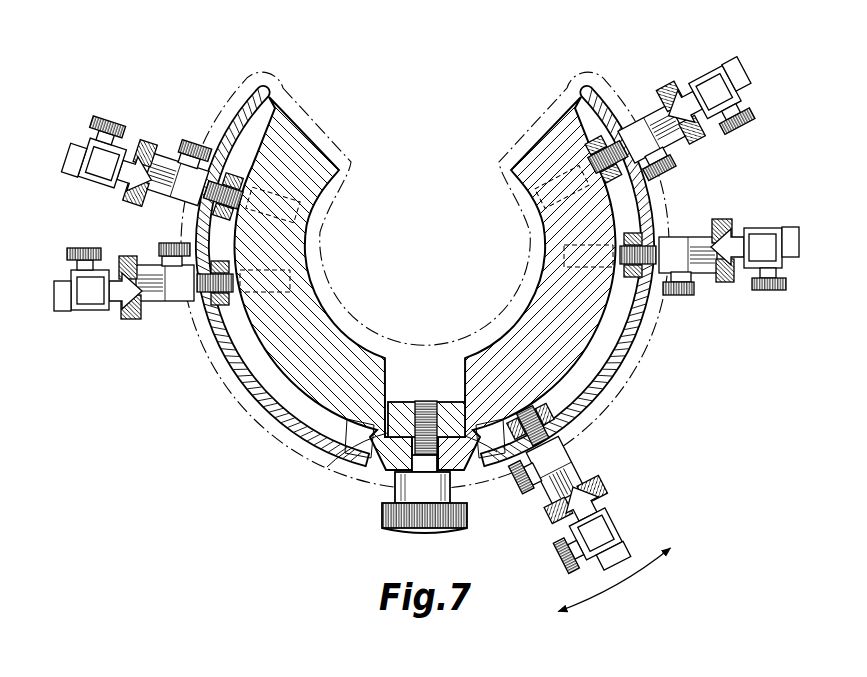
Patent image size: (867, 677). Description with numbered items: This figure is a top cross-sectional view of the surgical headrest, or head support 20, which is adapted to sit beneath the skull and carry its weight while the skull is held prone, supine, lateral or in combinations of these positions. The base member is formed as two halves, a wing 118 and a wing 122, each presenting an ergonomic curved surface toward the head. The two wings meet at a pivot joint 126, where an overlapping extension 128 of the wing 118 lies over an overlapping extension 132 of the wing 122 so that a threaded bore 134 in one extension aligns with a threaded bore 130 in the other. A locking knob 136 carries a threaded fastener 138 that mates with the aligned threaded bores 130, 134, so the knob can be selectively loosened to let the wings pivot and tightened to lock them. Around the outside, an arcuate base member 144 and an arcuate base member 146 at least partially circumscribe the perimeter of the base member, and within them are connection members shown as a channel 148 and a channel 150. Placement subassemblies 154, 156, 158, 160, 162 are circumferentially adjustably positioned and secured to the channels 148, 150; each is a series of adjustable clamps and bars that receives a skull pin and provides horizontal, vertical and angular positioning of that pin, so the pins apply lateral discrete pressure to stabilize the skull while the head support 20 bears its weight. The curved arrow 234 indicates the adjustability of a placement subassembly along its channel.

The head support 20 is at (383, 99).
The wing 118 is at (546, 258).
The wing 122 is at (304, 259).
The pivot joint 126 is at (405, 397).
The overlapping extension 128 is at (441, 400).
The threaded bore 130 is at (473, 455).
The overlapping extension 132 is at (397, 478).
The threaded bore 134 is at (470, 428).
The locking knob 136 is at (394, 533).
The threaded fastener 138 is at (378, 432).
The arcuate base member 144 is at (540, 157).
The arcuate base member 146 is at (308, 158).
The channel 148 is at (598, 106).
The channel 150 is at (255, 100).
The placement subassembly 154 is at (718, 70).
The placement subassembly 156 is at (764, 231).
The placement subassembly 158 is at (620, 539).
The placement subassembly 160 is at (68, 320).
The placement subassembly 162 is at (80, 126).
The pivot direction arrow 234 is at (634, 588).